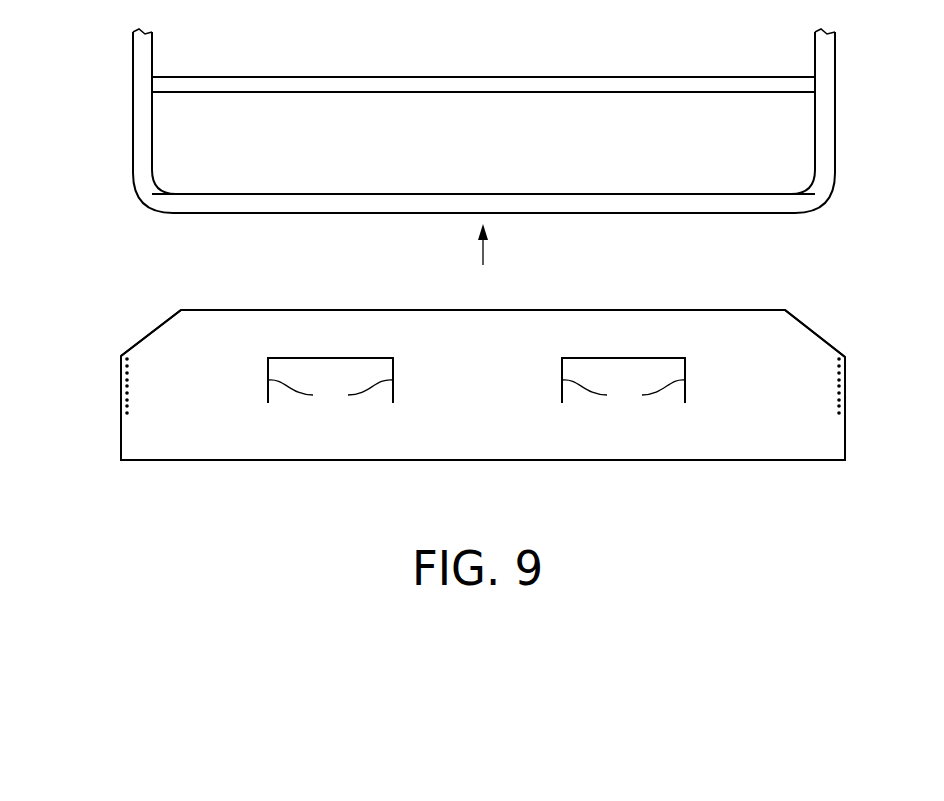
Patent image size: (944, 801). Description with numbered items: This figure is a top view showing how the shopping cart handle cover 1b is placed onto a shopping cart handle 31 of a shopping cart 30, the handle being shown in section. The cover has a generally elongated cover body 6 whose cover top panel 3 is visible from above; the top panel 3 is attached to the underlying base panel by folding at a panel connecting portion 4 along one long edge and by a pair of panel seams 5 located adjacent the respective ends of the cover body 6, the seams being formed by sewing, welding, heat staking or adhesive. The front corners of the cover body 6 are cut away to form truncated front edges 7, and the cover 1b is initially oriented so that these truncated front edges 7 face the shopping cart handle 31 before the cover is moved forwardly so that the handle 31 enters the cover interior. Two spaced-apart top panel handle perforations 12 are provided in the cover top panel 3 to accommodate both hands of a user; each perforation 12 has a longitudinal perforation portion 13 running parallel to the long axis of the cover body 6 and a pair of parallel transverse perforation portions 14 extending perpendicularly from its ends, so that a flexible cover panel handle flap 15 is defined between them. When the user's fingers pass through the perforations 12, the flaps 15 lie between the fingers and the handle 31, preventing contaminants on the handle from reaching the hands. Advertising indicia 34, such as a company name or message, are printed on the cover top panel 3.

The shopping cart 30 is at (120, 126).
The shopping cart handle 31 is at (353, 213).
The shopping cart handle cover 1b is at (150, 266).
The cover top panel 3 is at (665, 322).
The panel connecting portion 4 is at (672, 461).
The panel seam 5 is at (131, 365).
The cover body 6 is at (218, 304).
The truncated front edges 7 is at (150, 334).
The top panel handle perforation 12 is at (380, 350).
The longitudinal perforation portion 13 is at (311, 358).
The transverse perforation portions 14 is at (476, 394).
The cover panel handle flap 15 is at (385, 369).
The advertising indicia 34 is at (808, 446).